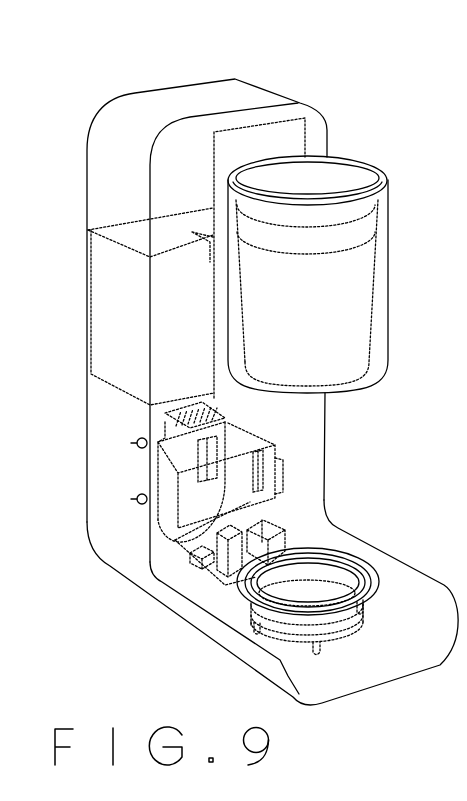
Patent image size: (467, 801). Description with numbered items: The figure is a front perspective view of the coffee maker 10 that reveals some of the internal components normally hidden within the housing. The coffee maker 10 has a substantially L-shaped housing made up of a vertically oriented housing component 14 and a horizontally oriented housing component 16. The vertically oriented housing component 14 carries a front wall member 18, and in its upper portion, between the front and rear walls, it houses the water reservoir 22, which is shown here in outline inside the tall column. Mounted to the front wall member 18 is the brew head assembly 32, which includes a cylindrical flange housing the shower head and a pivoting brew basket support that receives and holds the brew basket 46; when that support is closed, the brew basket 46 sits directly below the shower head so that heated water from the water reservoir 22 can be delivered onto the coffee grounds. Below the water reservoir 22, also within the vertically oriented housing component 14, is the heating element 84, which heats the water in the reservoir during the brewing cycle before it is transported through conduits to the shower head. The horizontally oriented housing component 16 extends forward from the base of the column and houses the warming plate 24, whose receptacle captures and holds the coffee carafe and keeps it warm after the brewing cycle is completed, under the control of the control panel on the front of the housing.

The coffee maker 10 is at (245, 361).
The vertically oriented housing component 14 is at (179, 320).
The horizontally oriented housing component 16 is at (272, 602).
The front wall member 18 is at (235, 258).
The water reservoir 22 is at (123, 306).
The warming plate 24 is at (318, 571).
The brew head assembly 32 is at (342, 274).
The brew basket 46 is at (307, 293).
The heating element 84 is at (157, 472).